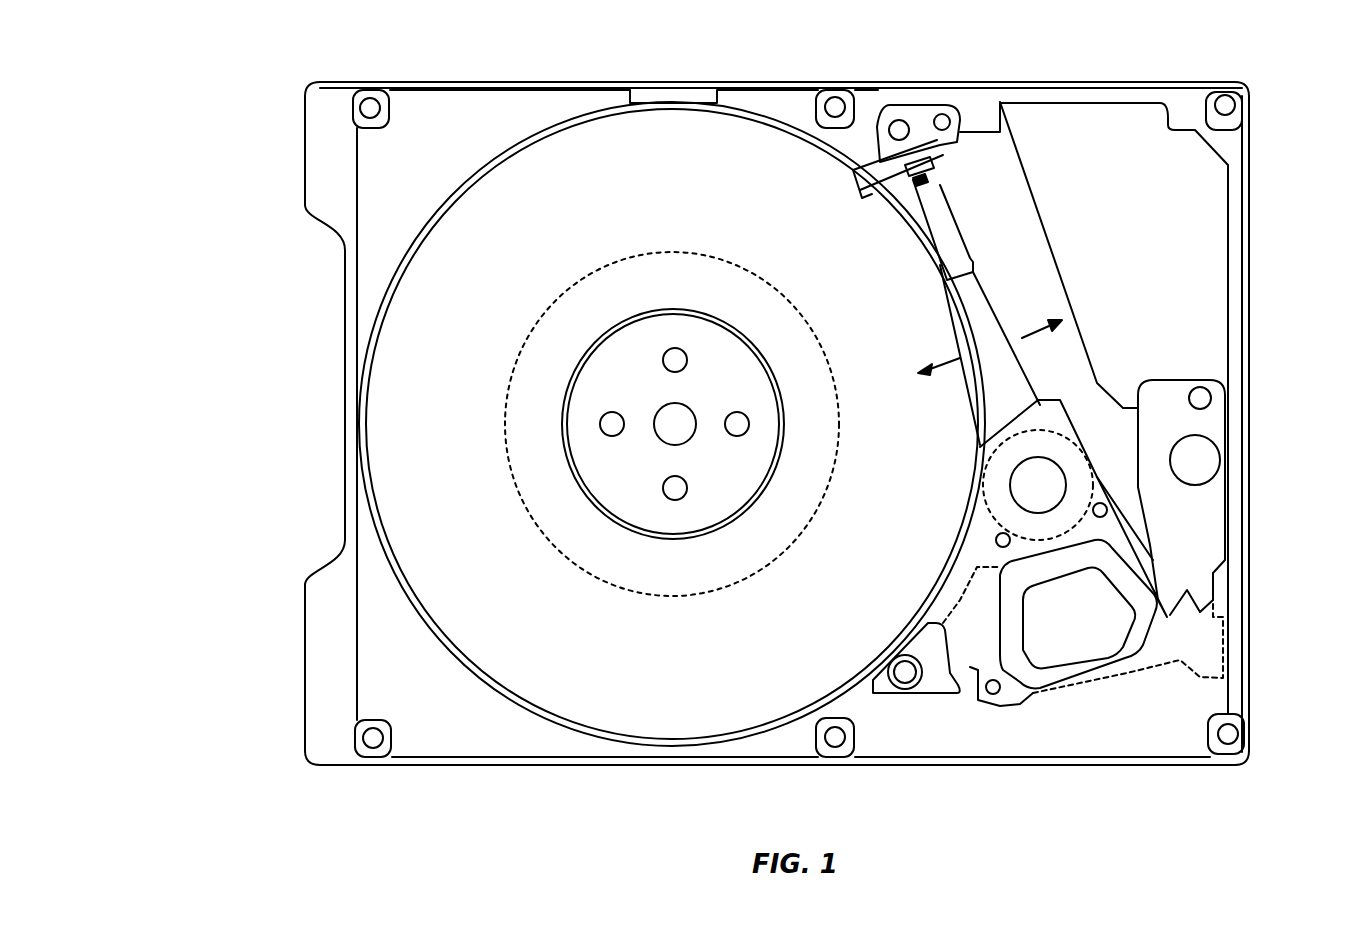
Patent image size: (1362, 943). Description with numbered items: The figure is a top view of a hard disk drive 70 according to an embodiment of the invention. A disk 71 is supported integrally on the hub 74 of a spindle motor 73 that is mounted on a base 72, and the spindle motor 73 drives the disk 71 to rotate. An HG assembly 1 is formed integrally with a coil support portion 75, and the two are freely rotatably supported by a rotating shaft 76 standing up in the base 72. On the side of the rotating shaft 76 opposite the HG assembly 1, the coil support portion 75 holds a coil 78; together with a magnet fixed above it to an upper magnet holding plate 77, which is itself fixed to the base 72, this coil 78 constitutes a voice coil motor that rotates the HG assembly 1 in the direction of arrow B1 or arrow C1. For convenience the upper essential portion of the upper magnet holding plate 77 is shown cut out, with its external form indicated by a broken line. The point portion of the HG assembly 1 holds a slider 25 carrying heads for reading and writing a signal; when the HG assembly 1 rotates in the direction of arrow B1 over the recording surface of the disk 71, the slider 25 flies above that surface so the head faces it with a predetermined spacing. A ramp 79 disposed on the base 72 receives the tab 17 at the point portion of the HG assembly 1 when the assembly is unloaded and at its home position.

The hard disk drive 70 is at (1075, 65).
The disk 71 is at (580, 695).
The base 72 is at (378, 700).
The spindle motor 73 is at (520, 410).
The hub 74 is at (702, 510).
The coil support portion 75 is at (1005, 458).
The rotating shaft 76 is at (1020, 484).
The upper magnet holding plate 77 is at (1190, 528).
The coil 78 is at (1130, 648).
The ramp 79 is at (880, 150).
The tab 17 is at (920, 158).
The slider 25 is at (940, 187).
The HG assembly 1 is at (1022, 380).
The direction of arrow B1 is at (921, 372).
The direction of arrow C1 is at (1063, 315).